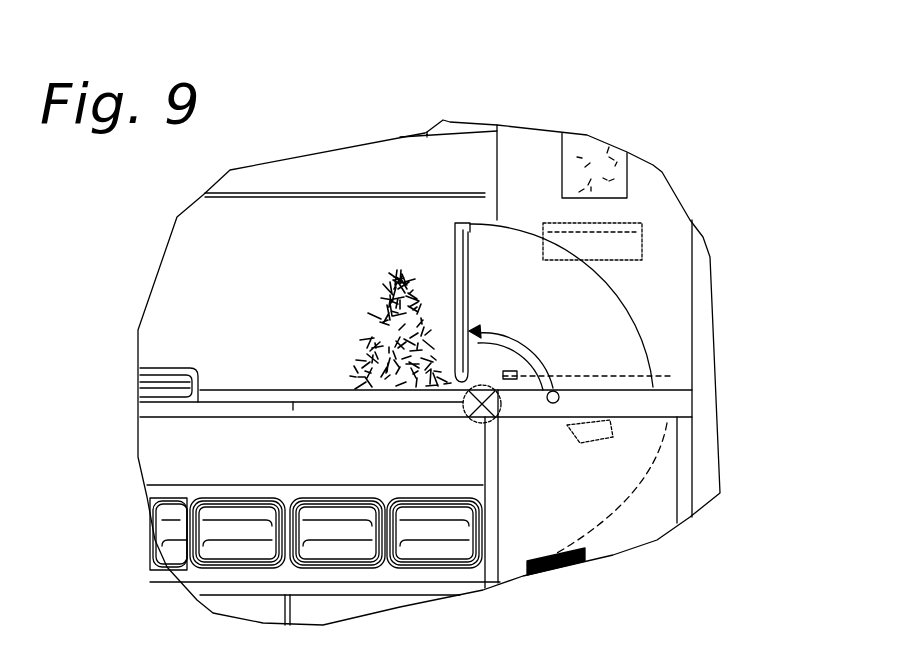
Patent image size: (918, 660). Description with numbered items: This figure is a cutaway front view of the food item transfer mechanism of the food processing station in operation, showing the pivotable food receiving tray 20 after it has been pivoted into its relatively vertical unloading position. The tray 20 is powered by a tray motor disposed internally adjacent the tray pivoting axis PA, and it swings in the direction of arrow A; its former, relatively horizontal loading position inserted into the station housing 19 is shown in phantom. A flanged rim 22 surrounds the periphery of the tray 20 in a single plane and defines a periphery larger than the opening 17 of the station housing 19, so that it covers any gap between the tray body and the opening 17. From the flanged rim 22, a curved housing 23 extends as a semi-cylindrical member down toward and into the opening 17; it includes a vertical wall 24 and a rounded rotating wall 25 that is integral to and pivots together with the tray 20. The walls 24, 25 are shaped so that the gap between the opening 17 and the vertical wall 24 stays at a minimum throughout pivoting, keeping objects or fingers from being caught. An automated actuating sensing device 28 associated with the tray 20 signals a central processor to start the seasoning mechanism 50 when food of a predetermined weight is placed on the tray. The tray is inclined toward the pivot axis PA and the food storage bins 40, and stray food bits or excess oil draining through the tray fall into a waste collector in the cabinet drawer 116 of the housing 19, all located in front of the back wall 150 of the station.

The food receiving tray 20 is at (427, 257).
The flanged rim 22 is at (478, 386).
The seasoning mechanism 50 is at (463, 277).
The rounded rotating wall 25 is at (623, 267).
The back wall 150 is at (653, 264).
The curved housing 23 is at (630, 293).
The vertical wall 24 is at (590, 327).
The opening 17 is at (617, 366).
The station housing 19 is at (670, 405).
The cabinet drawer 116 is at (660, 483).
The automated actuating sensing device 28 is at (663, 533).
The food storage bins 40 is at (240, 387).
The tray pivoting axis PA is at (478, 408).
The arrow A is at (522, 385).